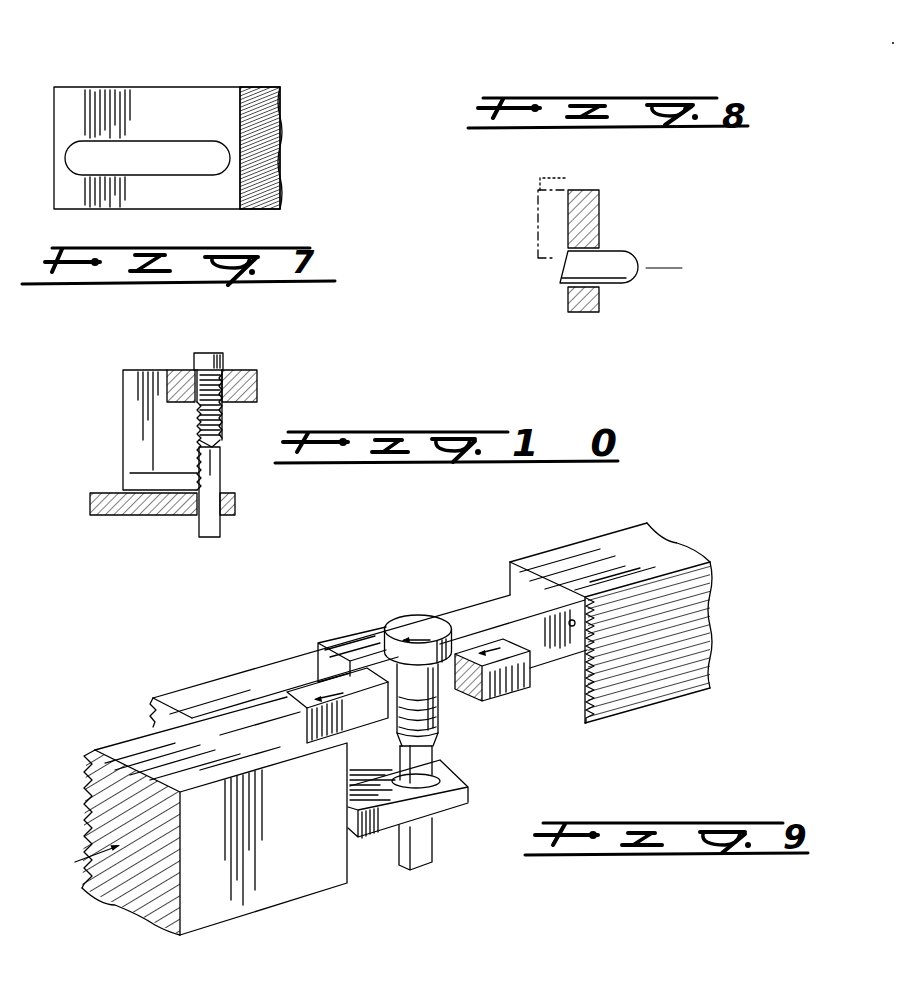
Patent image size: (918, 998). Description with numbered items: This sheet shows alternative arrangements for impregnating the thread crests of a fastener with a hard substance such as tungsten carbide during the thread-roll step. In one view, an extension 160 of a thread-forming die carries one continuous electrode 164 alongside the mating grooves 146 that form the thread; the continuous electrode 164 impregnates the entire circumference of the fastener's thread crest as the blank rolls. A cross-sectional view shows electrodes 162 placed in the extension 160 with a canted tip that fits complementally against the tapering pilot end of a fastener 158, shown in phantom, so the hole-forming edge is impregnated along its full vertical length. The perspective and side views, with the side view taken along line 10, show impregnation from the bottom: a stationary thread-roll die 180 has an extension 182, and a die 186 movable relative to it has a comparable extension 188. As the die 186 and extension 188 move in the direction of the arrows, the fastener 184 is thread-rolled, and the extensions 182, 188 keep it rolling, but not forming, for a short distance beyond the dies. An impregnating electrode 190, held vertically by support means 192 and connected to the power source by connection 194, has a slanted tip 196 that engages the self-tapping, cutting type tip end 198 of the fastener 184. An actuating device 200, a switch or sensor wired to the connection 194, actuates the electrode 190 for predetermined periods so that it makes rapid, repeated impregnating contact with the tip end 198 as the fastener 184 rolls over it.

In FIG. 9, the section line 10- 10 is at (417, 573).
In FIG. 7, the mating grooves 146 is at (276, 97).
In FIG. 8, the fastener 158 is at (535, 188).
In FIG. 7, the extension 160 is at (97, 93).
In FIG. 8, the extension 160 is at (603, 206).
In FIG. 8, the electrodes 162 is at (640, 276).
In FIG. 7, the continuous electrode 164 is at (199, 162).
In FIG. 10, the stationary thread-roll die 180 is at (133, 420).
In FIG. 9, the stationary thread-roll die 180 is at (673, 553).
In FIG. 10, the extension 182 is at (180, 372).
In FIG. 9, the extension 182 is at (345, 642).
In FIG. 10, the fastener 184 is at (232, 358).
In FIG. 9, the fastener 184 is at (397, 622).
In FIG. 9, the movable die 186 is at (220, 912).
In FIG. 10, the extension 188 is at (258, 380).
In FIG. 9, the extension 188 is at (303, 690).
In FIG. 10, the impregnating electrode 190 is at (130, 473).
In FIG. 9, the impregnating electrode 190 is at (428, 827).
In FIG. 10, the support means 192 is at (235, 512).
In FIG. 9, the support means 192 is at (470, 788).
In FIG. 10, the connection 194 is at (175, 548).
In FIG. 9, the connection 194 is at (348, 865).
In FIG. 10, the slanted tip 196 is at (220, 453).
In FIG. 9, the slanted tip 196 is at (440, 747).
In FIG. 10, the tip end 198 is at (217, 444).
In FIG. 9, the tip end 198 is at (432, 734).
In FIG. 9, the actuating device 200 is at (570, 628).